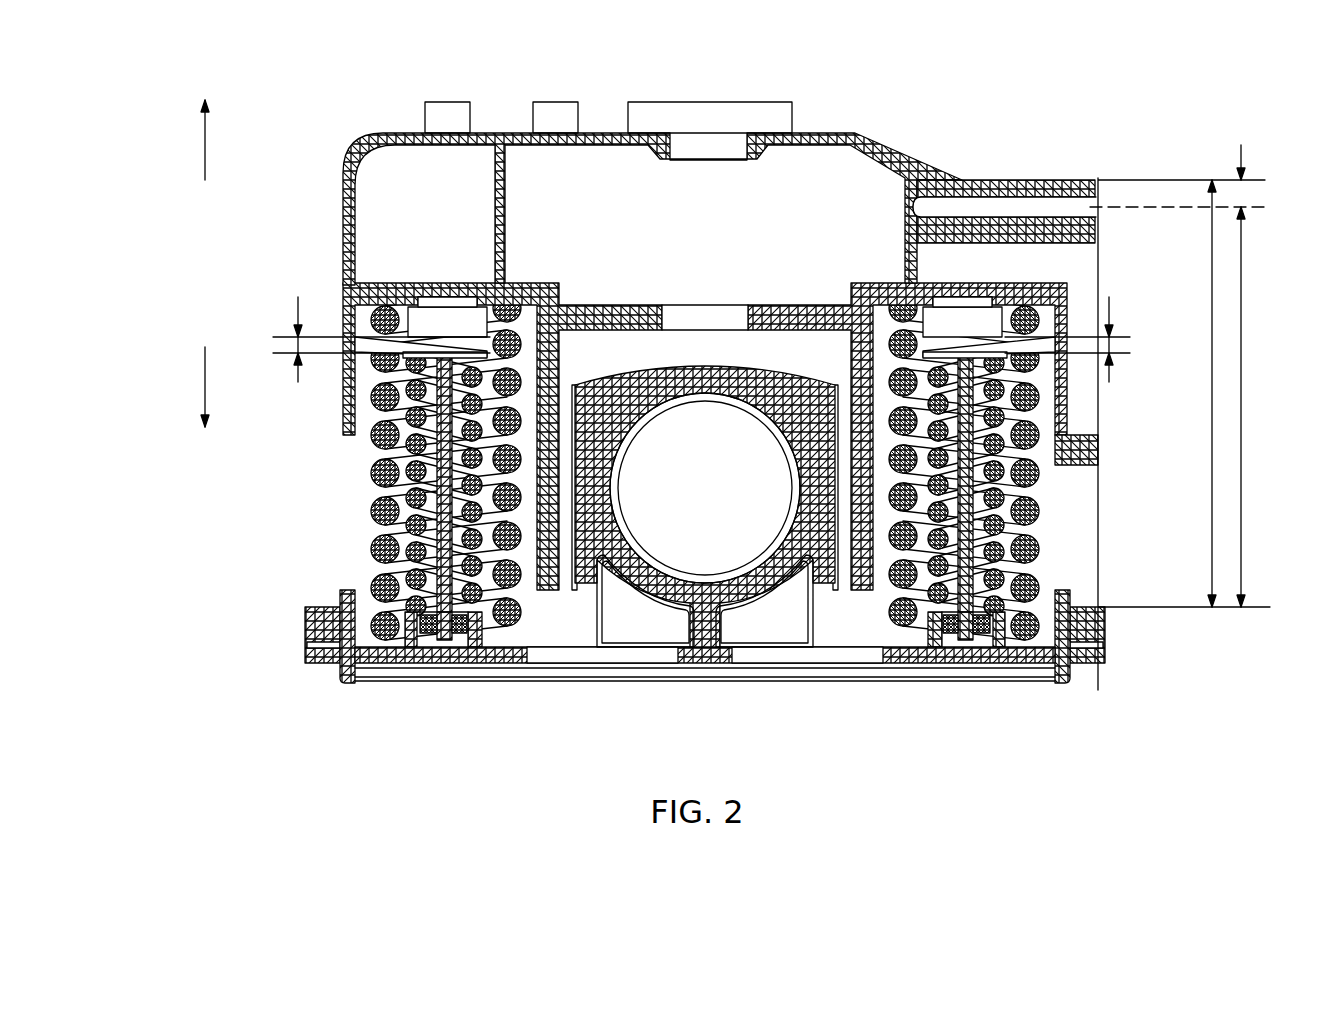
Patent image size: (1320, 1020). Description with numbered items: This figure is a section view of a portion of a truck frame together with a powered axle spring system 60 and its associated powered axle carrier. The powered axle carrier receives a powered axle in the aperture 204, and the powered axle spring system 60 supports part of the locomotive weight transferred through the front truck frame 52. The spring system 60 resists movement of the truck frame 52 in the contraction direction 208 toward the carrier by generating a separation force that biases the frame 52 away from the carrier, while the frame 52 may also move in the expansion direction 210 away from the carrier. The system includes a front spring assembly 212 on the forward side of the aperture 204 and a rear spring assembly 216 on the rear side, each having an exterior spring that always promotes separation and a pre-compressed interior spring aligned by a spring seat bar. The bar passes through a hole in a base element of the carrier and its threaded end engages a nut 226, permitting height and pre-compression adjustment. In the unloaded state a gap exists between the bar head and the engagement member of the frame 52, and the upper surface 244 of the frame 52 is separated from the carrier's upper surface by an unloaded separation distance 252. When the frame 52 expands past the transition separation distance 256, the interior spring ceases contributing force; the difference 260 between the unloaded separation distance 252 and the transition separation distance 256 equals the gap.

The front truck frame 52 is at (853, 140).
The upper surface 244 is at (1020, 180).
The nut 226 is at (458, 638).
The aperture 204 is at (668, 501).
The rear spring assembly 216 is at (1068, 505).
The powered axle spring system 60 is at (288, 516).
The front spring assembly 212 is at (345, 560).
The contraction direction 208 is at (205, 362).
The expansion direction 210 is at (205, 140).
The unloaded separation distance 252 is at (1212, 368).
The transition separation distance 256 is at (1241, 295).
The difference 260 is at (1241, 160).